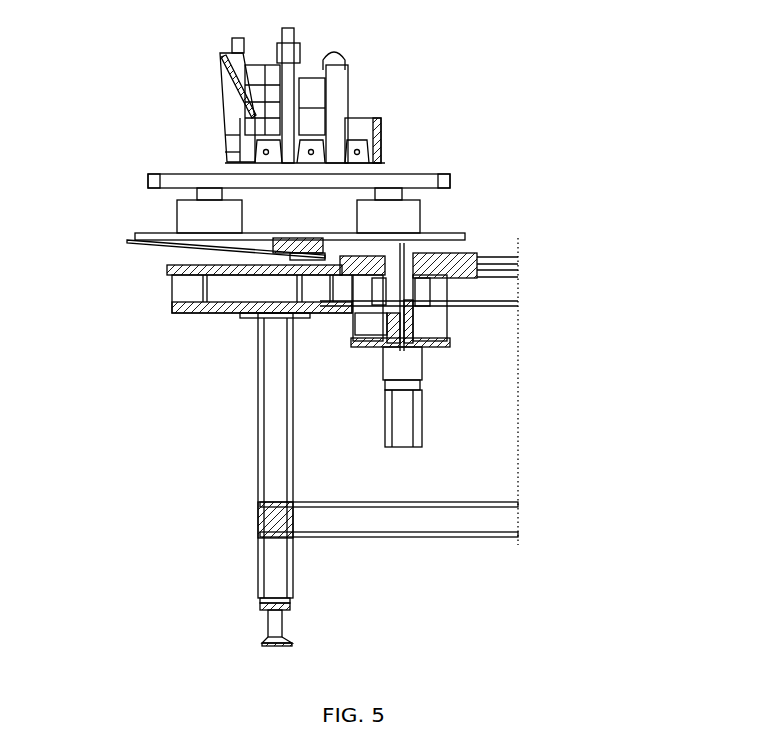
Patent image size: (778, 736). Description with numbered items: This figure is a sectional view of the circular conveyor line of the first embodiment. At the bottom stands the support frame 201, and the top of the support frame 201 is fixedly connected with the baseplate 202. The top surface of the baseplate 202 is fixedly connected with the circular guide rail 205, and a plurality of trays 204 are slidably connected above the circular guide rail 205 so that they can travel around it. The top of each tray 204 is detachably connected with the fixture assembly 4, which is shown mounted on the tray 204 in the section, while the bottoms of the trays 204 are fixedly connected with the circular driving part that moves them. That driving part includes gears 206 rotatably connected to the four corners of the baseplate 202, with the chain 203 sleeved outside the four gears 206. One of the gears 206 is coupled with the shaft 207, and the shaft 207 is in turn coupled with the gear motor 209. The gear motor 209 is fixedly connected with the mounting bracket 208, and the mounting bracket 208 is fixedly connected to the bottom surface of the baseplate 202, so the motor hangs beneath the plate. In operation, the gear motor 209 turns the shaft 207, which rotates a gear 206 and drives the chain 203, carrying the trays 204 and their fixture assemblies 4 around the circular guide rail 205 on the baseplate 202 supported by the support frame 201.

The fixture assembly 4 is at (309, 99).
The support frame 201 is at (486, 442).
The baseplate 202 is at (438, 197).
The chain 203 is at (422, 133).
The tray 204 is at (233, 186).
The circular guide rail 205 is at (179, 237).
The gear 206 is at (199, 306).
The shaft 207 is at (217, 351).
The mounting bracket 208 is at (282, 379).
The gear motor 209 is at (242, 496).